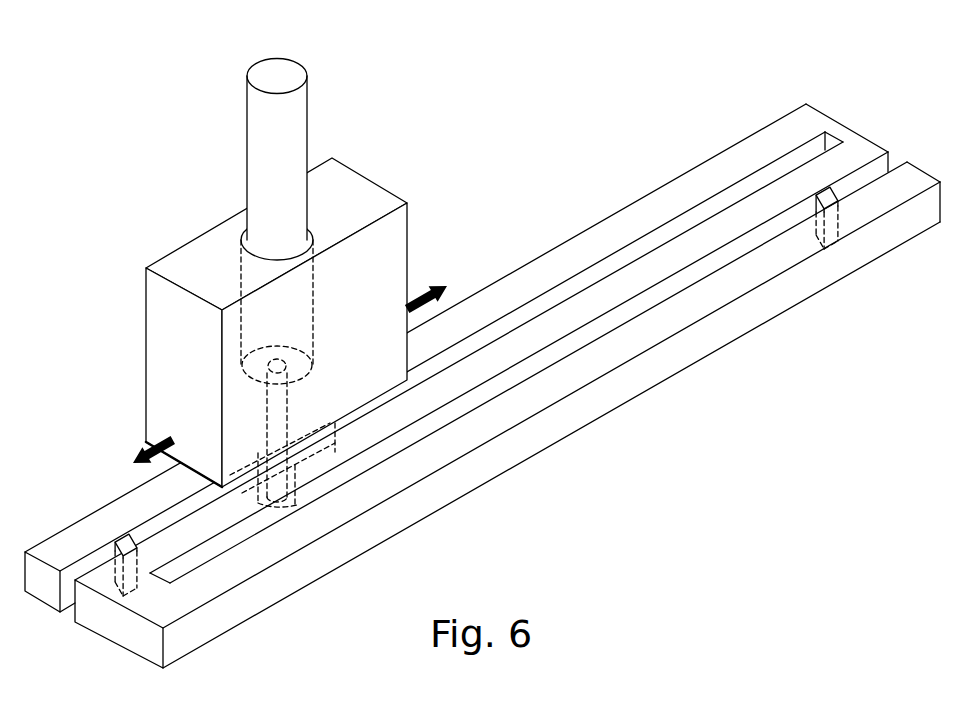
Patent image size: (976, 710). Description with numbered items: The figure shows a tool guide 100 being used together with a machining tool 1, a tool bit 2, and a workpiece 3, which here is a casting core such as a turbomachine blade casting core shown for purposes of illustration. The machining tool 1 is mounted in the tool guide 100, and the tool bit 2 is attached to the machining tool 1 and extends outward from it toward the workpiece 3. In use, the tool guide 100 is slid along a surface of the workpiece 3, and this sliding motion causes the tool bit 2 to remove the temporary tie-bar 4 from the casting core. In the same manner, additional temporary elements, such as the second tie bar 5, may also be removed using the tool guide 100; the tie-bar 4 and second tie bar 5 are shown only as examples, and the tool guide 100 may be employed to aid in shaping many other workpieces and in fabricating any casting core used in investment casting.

The machining tool 1 is at (228, 124).
The tool bit 2 is at (320, 478).
The workpiece 3 is at (846, 116).
The temporary tie-bar 4 is at (96, 545).
The second tie bar 5 is at (842, 182).
The tool guide 100 is at (128, 342).